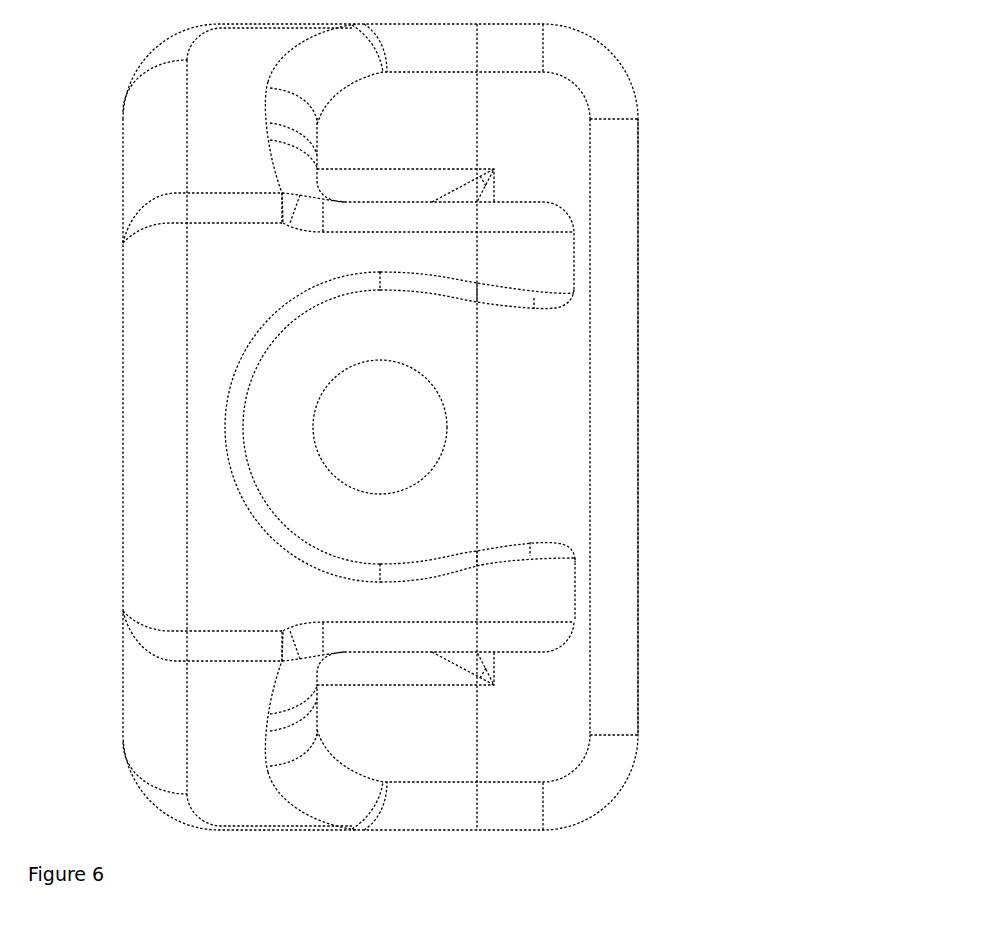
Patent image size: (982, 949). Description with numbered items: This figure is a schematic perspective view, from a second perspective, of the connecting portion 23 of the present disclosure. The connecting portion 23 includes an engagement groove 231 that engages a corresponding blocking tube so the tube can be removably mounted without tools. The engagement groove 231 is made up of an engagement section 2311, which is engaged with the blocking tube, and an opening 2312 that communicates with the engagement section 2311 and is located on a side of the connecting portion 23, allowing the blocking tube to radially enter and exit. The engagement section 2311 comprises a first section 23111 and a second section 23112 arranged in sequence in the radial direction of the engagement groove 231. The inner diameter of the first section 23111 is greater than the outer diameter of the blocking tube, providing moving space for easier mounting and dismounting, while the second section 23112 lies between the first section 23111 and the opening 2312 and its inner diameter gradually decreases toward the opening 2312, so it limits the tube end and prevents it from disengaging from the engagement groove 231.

The connecting portion 23 is at (490, 427).
The engagement groove 231 is at (586, 427).
The engagement section 2311 is at (540, 400).
The first section 23111 is at (348, 329).
The second section 23112 is at (470, 342).
The opening 2312 is at (576, 414).